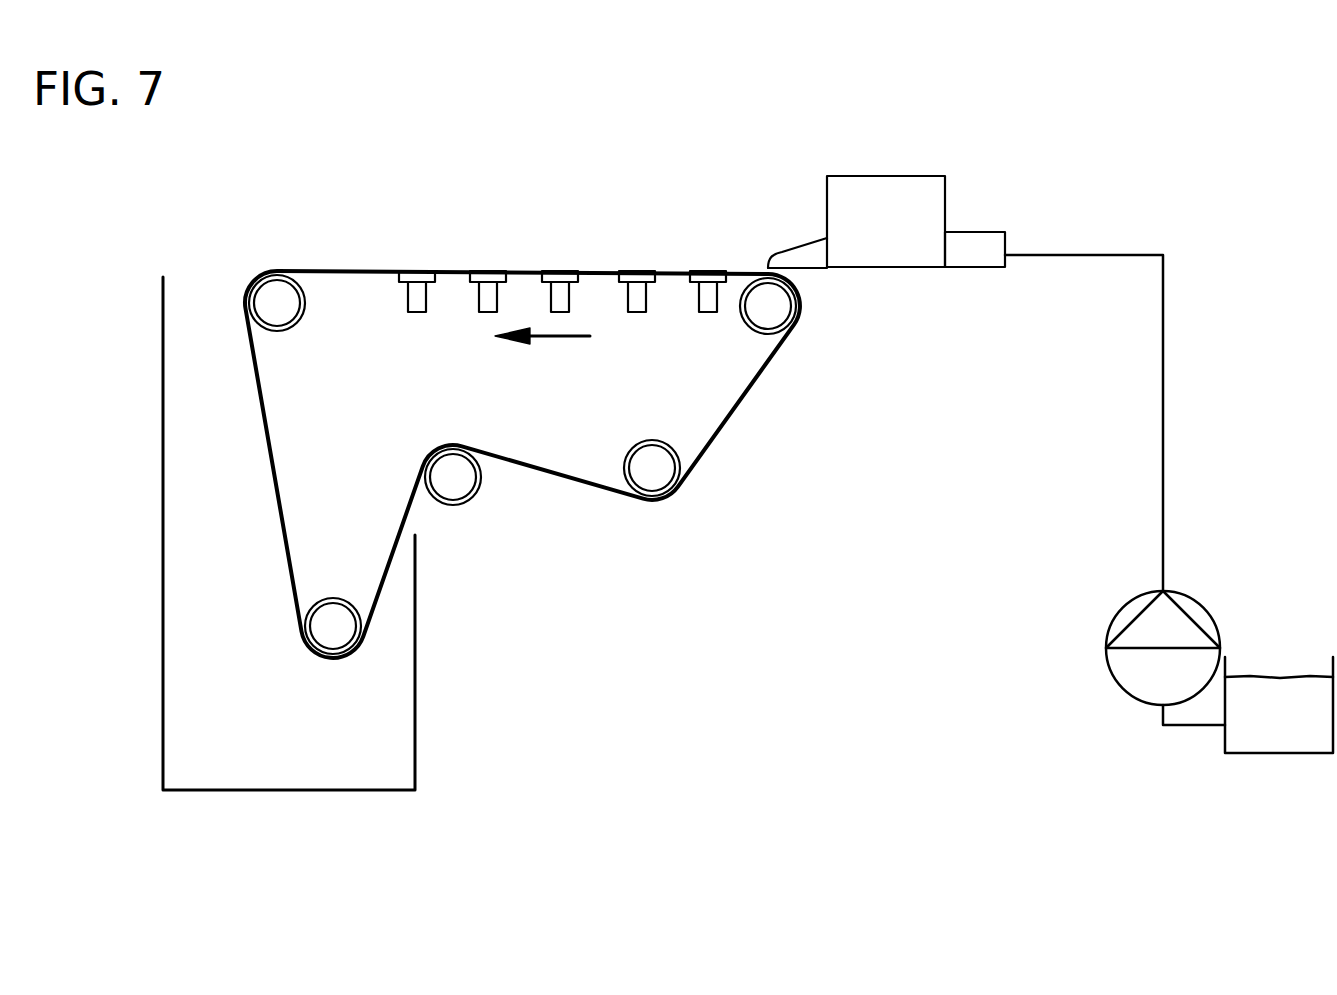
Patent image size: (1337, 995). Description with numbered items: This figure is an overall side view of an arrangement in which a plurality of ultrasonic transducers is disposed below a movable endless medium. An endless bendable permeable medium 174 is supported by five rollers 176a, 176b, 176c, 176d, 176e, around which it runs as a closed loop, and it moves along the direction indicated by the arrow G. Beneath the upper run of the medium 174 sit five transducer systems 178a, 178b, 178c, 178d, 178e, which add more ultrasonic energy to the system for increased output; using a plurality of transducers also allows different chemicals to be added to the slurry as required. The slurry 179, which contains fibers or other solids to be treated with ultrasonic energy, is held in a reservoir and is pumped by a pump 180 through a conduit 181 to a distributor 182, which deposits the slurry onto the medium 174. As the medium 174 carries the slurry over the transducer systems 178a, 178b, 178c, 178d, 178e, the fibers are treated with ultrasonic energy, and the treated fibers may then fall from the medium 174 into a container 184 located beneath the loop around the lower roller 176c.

The endless bendable permeable medium 174 is at (343, 268).
The roller 176a is at (778, 314).
The roller 176b is at (267, 300).
The roller 176c is at (330, 626).
The roller 176d is at (456, 483).
The roller 176e is at (658, 468).
The transducer system 178a is at (712, 305).
The transducer system 178b is at (637, 304).
The transducer system 178c is at (563, 303).
The transducer system 178d is at (487, 312).
The transducer system 178e is at (417, 312).
The arrow G is at (552, 340).
The slurry 179 is at (1262, 737).
The pump 180 is at (1130, 630).
The conduit 181 is at (1133, 253).
The distributor 182 is at (893, 200).
The container 184 is at (388, 706).